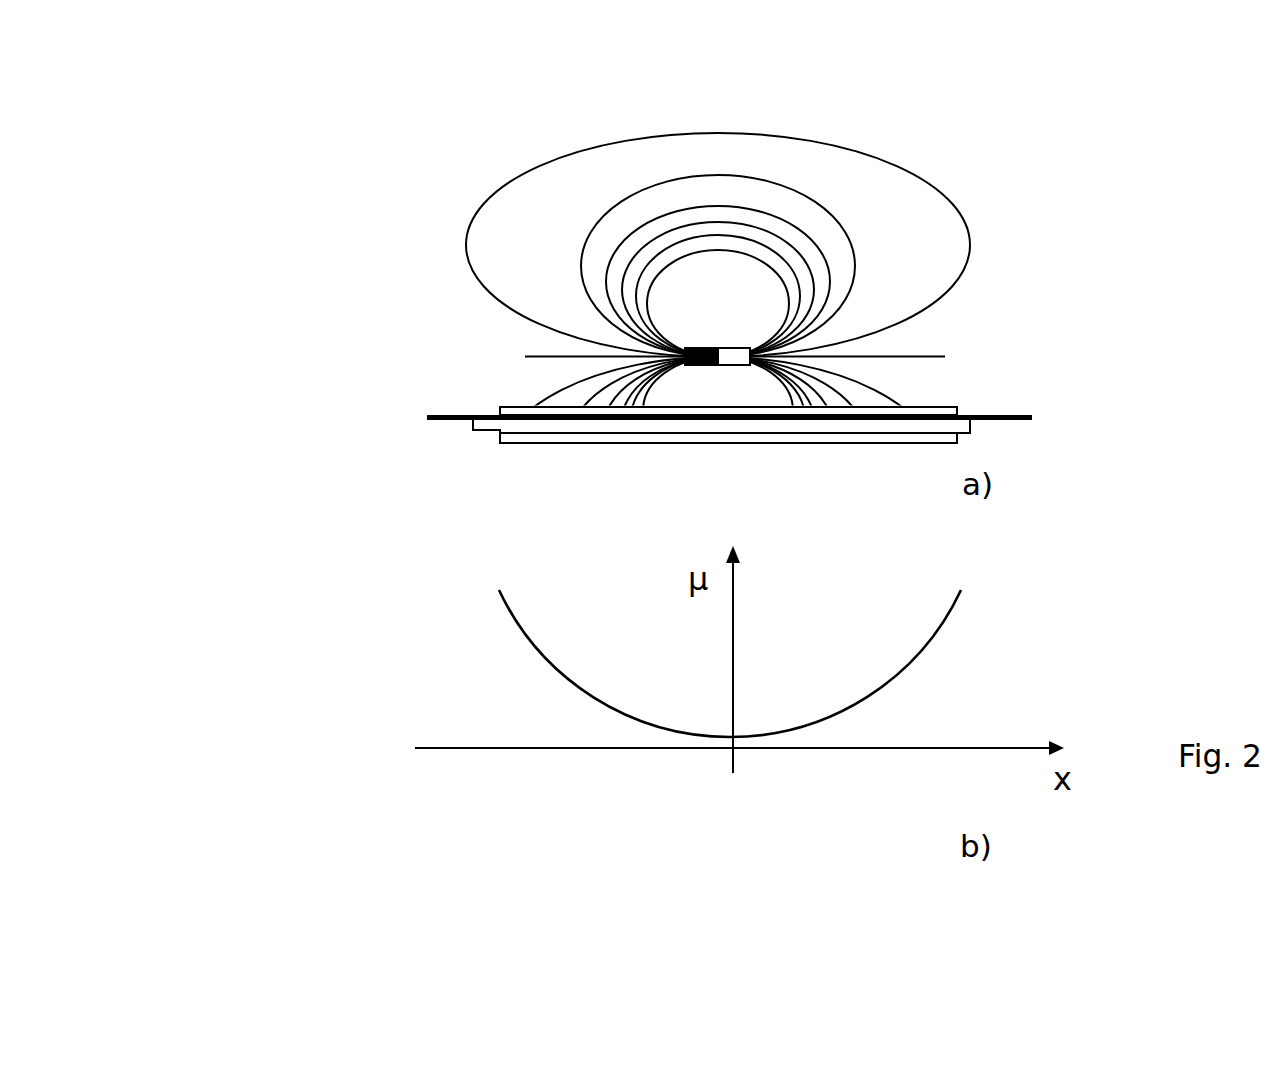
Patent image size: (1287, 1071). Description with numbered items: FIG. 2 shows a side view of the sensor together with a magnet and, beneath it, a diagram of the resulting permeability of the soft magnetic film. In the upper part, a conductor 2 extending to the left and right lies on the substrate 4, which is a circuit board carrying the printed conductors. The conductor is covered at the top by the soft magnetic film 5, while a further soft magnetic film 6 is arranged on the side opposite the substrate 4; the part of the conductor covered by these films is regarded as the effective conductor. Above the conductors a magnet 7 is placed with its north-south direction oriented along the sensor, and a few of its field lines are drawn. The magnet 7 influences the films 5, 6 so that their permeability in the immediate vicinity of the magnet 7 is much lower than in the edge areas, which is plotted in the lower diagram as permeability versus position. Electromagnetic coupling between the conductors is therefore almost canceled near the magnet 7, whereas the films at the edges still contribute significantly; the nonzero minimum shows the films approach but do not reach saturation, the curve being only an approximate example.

The first conductor 2 is at (648, 395).
The substrate 4 is at (492, 428).
The soft magnetic film 5 is at (527, 407).
The soft magnetic film 6 is at (522, 441).
The magnet 7 is at (735, 353).